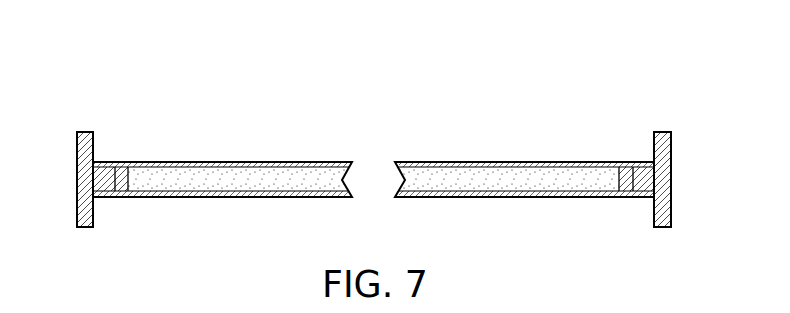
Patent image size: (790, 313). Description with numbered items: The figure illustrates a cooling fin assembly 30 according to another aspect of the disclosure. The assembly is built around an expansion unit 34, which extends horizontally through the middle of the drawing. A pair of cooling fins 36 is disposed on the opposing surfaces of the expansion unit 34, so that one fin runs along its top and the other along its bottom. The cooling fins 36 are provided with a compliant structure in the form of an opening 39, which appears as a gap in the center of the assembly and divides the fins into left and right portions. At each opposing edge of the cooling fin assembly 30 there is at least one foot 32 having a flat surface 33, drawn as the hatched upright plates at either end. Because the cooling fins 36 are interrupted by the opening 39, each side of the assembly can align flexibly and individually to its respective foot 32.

The cooling fin assembly 30 is at (92, 87).
The foot 32 is at (664, 171).
The flat surface 33 is at (74, 181).
The expansion unit 34 is at (248, 173).
The cooling fins 36 is at (545, 165).
The opening 39 is at (372, 175).